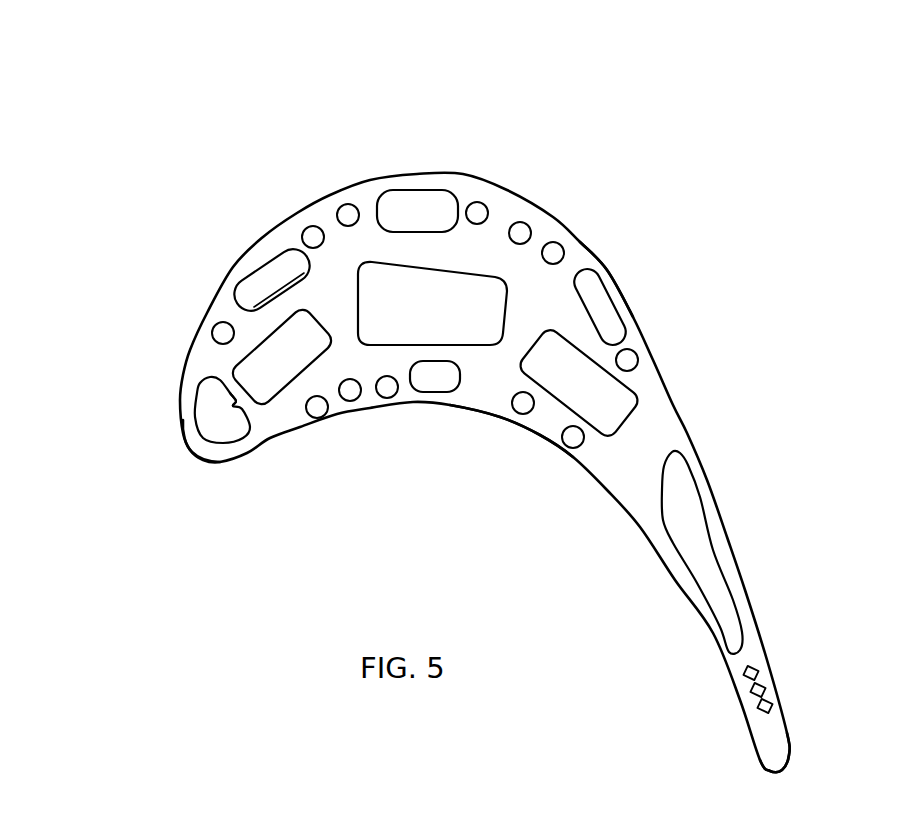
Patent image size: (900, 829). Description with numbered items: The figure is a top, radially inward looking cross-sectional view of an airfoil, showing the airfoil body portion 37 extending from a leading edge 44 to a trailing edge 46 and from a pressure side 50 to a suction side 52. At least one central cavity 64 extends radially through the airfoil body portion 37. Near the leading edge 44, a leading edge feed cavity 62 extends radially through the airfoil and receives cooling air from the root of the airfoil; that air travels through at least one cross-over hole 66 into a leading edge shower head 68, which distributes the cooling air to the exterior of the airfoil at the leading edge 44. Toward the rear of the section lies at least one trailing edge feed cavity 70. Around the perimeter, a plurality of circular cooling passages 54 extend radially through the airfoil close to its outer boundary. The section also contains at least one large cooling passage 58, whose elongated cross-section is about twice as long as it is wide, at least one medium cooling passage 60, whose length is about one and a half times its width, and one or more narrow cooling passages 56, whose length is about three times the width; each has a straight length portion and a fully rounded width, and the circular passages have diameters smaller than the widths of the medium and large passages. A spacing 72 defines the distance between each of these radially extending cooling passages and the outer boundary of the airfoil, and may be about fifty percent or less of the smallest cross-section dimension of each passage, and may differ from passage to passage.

The airfoil body portion 37 is at (124, 108).
The leading edge 44 is at (187, 440).
The trailing edge 46 is at (793, 757).
The pressure side 50 is at (510, 430).
The suction side 52 is at (593, 247).
The circular cooling passages 54 is at (480, 217).
The narrow cooling passage 56 is at (610, 300).
The large cooling passage 58 is at (253, 273).
The medium cooling passage 60 is at (427, 392).
The leading edge feed cavity 62 is at (275, 400).
The central cavity 64 is at (383, 262).
The cross-over hole 66 is at (232, 395).
The leading edge shower head 68 is at (197, 400).
The trailing edge feed cavity 70 is at (717, 547).
The spacing 72 is at (300, 230).